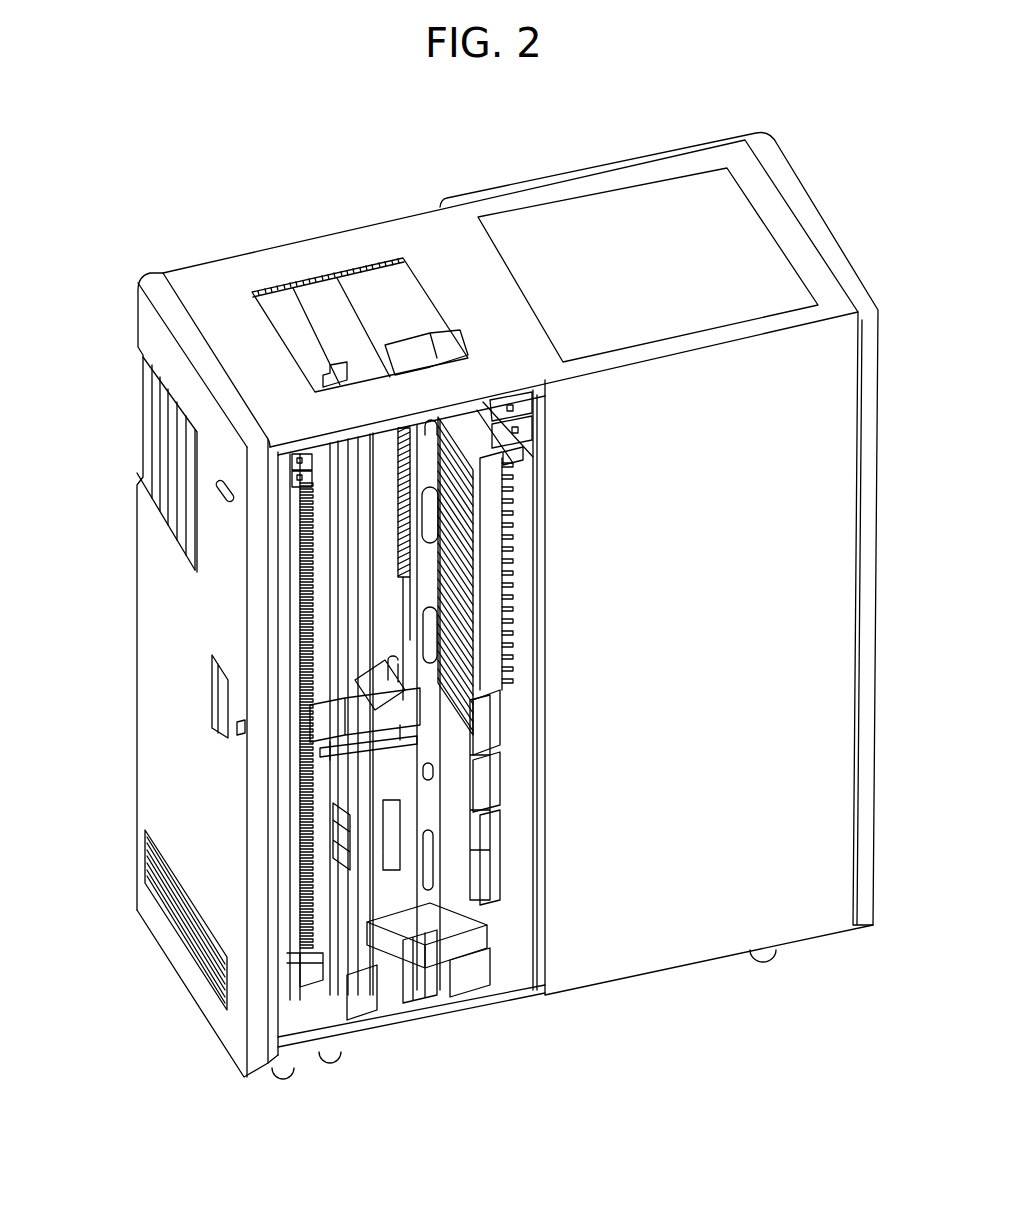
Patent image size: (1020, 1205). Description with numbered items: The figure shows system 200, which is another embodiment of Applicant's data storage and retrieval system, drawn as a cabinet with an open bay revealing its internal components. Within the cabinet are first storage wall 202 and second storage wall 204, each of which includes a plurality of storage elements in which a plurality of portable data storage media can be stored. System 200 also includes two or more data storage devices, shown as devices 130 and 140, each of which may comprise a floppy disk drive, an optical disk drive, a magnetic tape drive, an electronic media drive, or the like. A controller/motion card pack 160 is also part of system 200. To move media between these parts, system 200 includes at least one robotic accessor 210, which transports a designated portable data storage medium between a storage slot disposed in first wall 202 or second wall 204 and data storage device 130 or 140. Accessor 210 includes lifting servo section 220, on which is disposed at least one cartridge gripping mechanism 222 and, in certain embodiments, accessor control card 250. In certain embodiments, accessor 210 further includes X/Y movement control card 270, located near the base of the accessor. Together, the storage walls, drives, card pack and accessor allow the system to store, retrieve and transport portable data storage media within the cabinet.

The system 200 is at (711, 998).
The first storage wall 202 is at (487, 502).
The second storage wall 204 is at (290, 583).
The cartridge gripping mechanism 222 is at (435, 712).
The controller/motion card pack 160 is at (497, 752).
The data storage device 130 is at (480, 780).
The data storage device 140 is at (500, 868).
The X/Y movement control card 270 is at (500, 923).
The accessor control card 250 is at (290, 693).
The robotic accessor 210 is at (290, 738).
The lifting servo section 220 is at (290, 772).